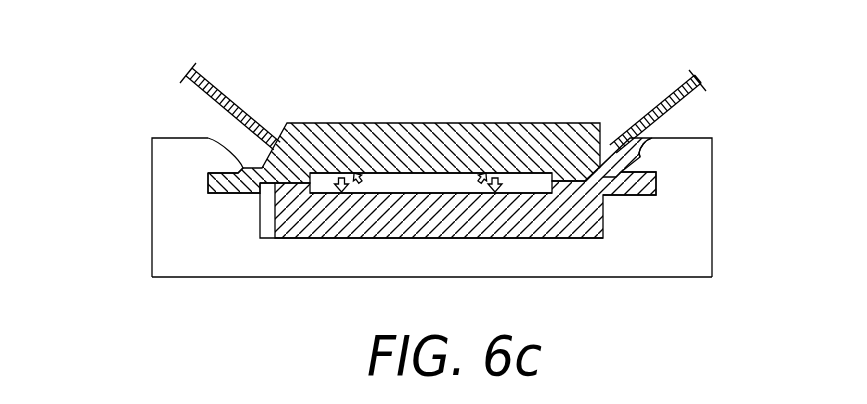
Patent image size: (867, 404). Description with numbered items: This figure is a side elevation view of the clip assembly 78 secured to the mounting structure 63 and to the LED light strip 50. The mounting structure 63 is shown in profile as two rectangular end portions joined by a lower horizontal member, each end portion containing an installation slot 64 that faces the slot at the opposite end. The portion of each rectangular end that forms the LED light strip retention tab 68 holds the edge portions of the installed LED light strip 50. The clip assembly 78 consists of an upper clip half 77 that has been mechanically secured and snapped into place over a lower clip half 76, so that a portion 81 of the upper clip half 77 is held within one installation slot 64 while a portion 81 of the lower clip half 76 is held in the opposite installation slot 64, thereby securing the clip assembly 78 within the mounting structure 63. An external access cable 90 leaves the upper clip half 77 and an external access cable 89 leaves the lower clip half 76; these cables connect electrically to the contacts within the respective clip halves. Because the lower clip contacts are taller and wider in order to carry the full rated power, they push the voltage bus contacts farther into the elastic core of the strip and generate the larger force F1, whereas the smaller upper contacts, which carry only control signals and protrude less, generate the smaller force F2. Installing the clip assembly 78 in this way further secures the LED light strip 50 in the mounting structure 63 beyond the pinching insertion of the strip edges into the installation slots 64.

The mounting structure 63 is at (690, 220).
The upper clip half 77 is at (429, 133).
The lower clip half 76 is at (319, 223).
The clip assembly 78 is at (433, 163).
The installation slot 64 is at (208, 182).
The portion of clip half 81 is at (650, 173).
The LED light strip retention tab 68 is at (224, 158).
The external access cable 90 is at (207, 73).
The external access cable 89 is at (683, 86).
The LED light strip 50 is at (534, 181).
The force F1 is at (338, 178).
The force F2 is at (362, 177).